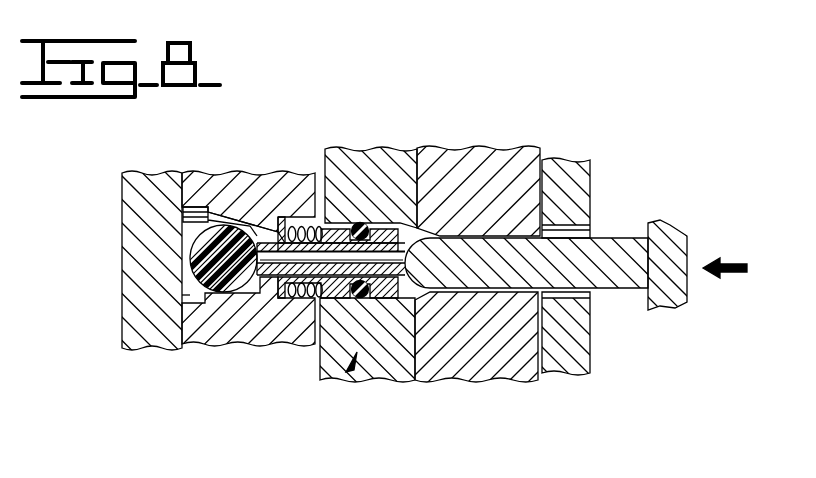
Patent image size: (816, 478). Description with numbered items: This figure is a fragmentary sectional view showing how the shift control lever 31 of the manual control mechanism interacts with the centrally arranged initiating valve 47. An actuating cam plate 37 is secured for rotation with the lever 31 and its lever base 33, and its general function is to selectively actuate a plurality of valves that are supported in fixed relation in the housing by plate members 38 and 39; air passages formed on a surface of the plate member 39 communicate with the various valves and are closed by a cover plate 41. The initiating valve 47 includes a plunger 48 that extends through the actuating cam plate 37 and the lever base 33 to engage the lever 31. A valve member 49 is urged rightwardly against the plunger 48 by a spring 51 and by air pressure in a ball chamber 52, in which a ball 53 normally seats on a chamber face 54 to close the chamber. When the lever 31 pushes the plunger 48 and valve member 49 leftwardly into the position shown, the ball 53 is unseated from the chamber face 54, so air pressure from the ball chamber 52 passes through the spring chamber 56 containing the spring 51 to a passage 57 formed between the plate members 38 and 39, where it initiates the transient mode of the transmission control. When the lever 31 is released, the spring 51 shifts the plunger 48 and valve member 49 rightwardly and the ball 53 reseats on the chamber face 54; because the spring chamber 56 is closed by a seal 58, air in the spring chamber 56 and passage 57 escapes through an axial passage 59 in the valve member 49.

The lever 31 is at (668, 243).
The lever base 33 is at (562, 173).
The actuating cam plate 37 is at (467, 173).
The plate member 38 is at (403, 167).
The plate member 39 is at (242, 337).
The cover plate 41 is at (147, 340).
The initiating valve 47 is at (352, 362).
The plunger 48 is at (625, 284).
The valve member 49 is at (380, 229).
The spring 51 is at (288, 242).
The ball chamber 52 is at (190, 294).
The ball 53 is at (197, 265).
The chamber face 54 is at (250, 218).
The spring chamber 56 is at (300, 222).
The passage 57 is at (316, 340).
The seal 58 is at (365, 299).
The axial passage 59 is at (390, 266).